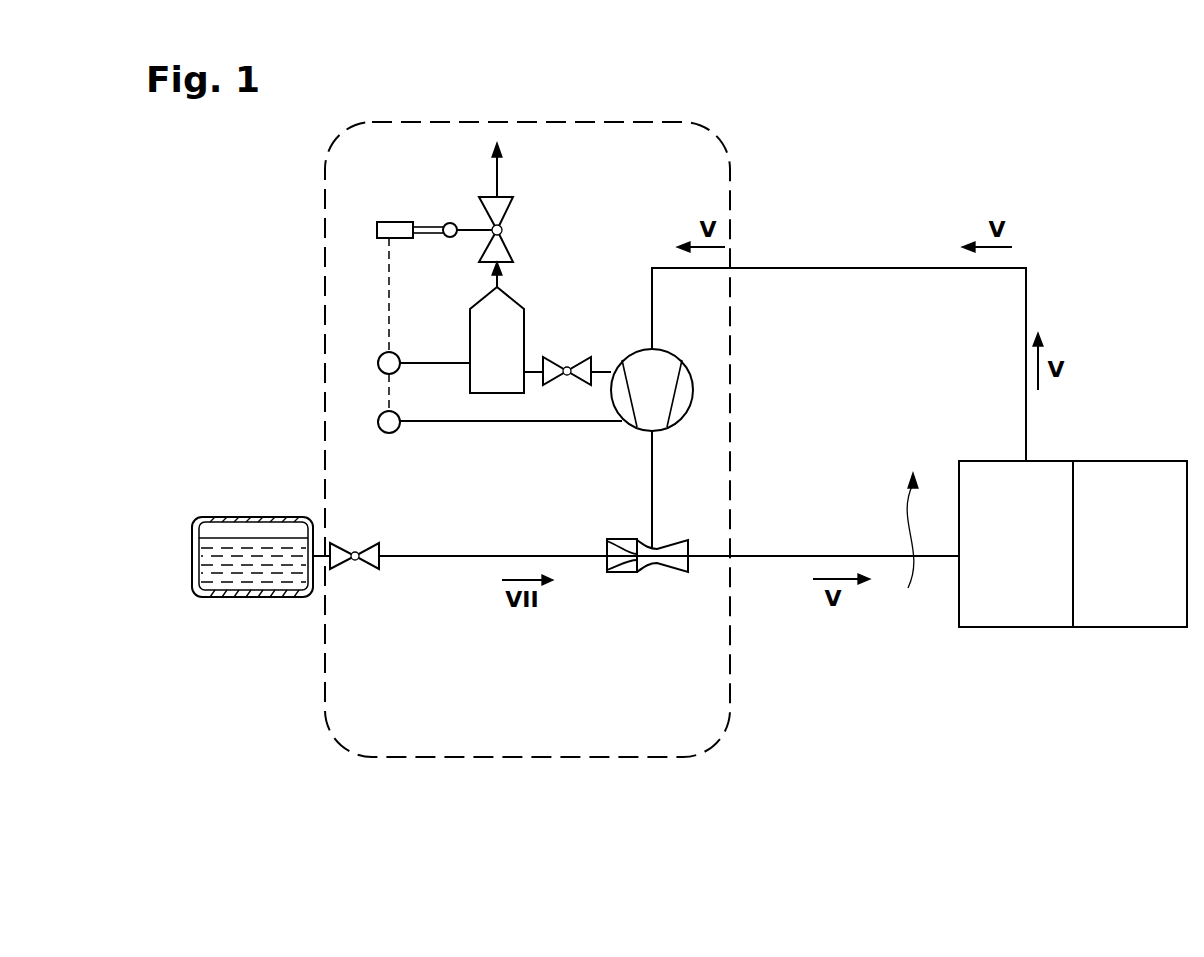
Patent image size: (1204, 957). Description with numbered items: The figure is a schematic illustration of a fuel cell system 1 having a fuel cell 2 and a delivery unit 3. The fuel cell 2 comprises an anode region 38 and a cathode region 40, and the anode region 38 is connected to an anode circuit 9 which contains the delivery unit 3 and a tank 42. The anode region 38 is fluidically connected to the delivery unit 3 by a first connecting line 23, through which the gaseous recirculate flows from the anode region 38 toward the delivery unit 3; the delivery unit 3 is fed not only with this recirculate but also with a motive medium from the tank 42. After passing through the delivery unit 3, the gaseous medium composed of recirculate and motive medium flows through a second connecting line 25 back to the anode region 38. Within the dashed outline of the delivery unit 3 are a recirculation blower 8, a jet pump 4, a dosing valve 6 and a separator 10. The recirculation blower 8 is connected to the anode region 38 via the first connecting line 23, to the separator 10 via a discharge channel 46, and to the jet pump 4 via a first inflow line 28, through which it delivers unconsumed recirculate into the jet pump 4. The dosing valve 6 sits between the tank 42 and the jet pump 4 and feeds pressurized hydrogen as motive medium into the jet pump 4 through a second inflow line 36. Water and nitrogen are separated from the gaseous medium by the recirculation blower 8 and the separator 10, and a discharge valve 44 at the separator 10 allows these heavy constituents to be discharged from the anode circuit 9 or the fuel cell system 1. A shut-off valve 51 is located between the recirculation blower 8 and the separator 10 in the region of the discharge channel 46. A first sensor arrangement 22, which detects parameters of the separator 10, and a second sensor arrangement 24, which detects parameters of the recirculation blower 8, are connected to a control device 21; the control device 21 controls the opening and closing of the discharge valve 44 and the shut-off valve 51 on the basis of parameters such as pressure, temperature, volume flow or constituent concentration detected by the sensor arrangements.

The fuel cell system 1 is at (992, 131).
The fuel cell 2 is at (1073, 552).
The delivery unit 3 is at (717, 140).
The jet pump 4 is at (635, 615).
The dosing valve 6 is at (355, 543).
The recirculation blower 8 is at (636, 428).
The anode circuit 9 is at (908, 550).
The separator 10 is at (483, 350).
The control device 21 is at (397, 222).
The first sensor arrangement 22 is at (397, 353).
The first connecting line 23 is at (1026, 298).
The second sensor arrangement 24 is at (389, 433).
The second connecting line 25 is at (776, 558).
The first inflow line 28 is at (652, 496).
The second inflow line 36 is at (605, 558).
The anode region 38 is at (1018, 612).
The cathode region 40 is at (1147, 468).
The tank 42 is at (253, 516).
The discharge valve 44 is at (502, 230).
The discharge channel 46 is at (605, 372).
The shut-off valve 51 is at (567, 360).